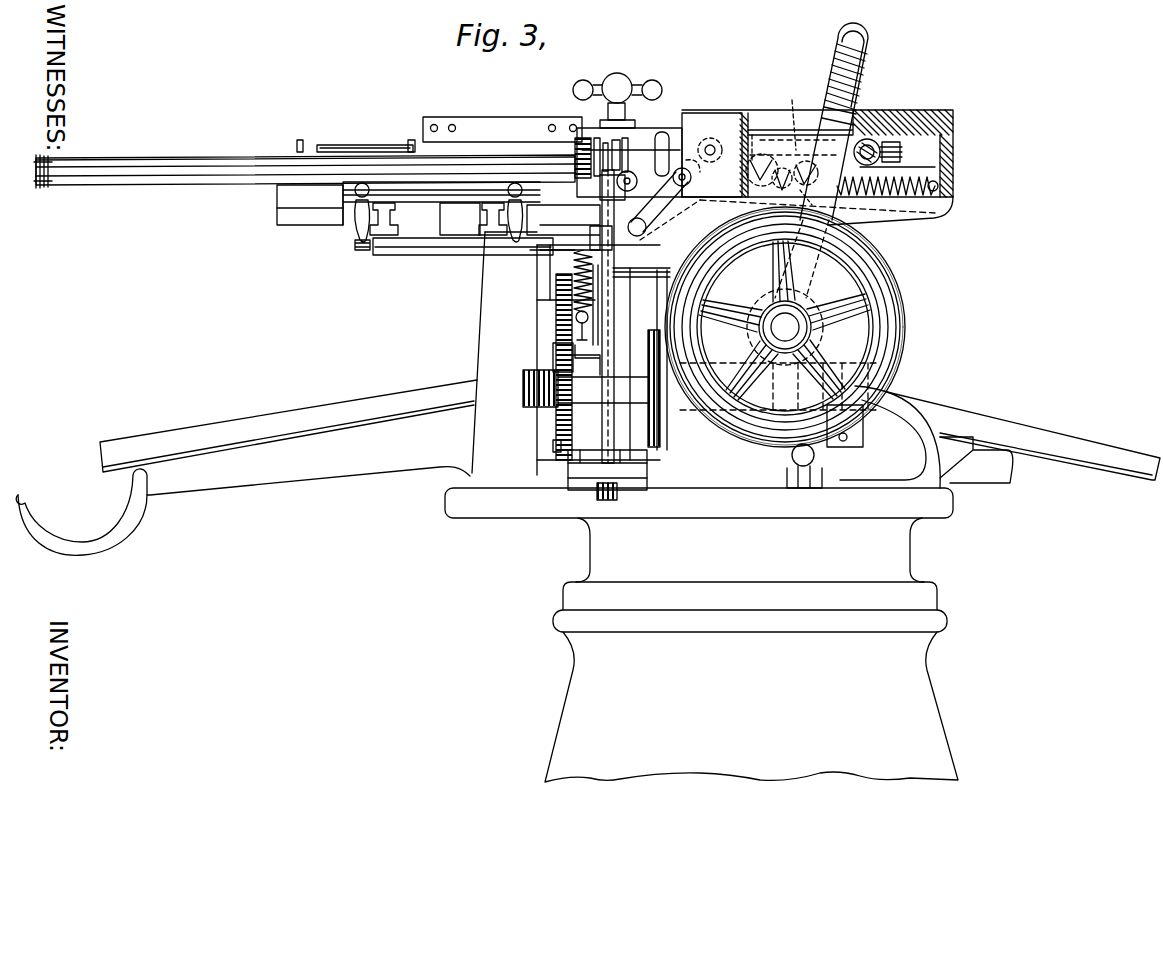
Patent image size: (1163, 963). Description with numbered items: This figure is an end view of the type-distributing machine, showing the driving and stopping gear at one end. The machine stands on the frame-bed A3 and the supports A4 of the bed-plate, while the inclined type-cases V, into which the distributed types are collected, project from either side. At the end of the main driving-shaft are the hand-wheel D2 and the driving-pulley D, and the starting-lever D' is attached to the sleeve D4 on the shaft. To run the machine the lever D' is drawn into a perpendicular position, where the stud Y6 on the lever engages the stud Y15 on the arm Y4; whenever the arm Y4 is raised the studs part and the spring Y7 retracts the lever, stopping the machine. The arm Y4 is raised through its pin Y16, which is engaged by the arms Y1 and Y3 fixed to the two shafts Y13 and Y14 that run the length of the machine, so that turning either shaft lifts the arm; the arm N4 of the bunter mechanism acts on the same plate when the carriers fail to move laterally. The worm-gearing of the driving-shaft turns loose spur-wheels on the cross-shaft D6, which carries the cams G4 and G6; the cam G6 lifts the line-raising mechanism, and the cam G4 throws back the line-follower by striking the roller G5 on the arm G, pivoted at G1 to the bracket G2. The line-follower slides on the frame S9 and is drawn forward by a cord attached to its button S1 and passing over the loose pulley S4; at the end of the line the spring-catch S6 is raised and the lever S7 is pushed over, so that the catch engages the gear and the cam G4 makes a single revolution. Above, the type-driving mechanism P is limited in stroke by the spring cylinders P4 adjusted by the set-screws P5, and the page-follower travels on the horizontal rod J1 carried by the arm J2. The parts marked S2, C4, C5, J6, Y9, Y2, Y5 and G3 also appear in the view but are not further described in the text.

The horizontal rod J1 is at (37, 187).
The arm J2 is at (147, 166).
The type-driving mechanism P is at (476, 105).
The cylinder containing spiral spring P4 is at (371, 130).
The set-screw P5 is at (299, 145).
The button S1 is at (578, 142).
The collar S2 is at (628, 148).
The loose pulley S4 is at (585, 180).
The spring-catch S6 is at (608, 150).
The lever S7 is at (598, 238).
The frame S9 is at (597, 140).
The pivot C4 is at (628, 192).
The bracket C5 is at (598, 205).
The arm N4 is at (672, 166).
The block J6 is at (715, 155).
The pawl Y9 is at (690, 150).
The arm Y1 is at (856, 142).
The housing Y2 is at (925, 172).
The arm Y3 is at (764, 152).
The arm Y4 is at (798, 160).
The rod Y5 is at (900, 152).
The stud Y6 is at (845, 210).
The spring Y7 is at (937, 194).
The shaft Y13 is at (891, 140).
The shaft Y14 is at (747, 128).
The stud Y15 is at (806, 160).
The pin Y16 is at (802, 106).
The starting-lever D' is at (821, 160).
The driving-pulley D is at (801, 347).
The hand-wheel D2 is at (903, 320).
The sleeve D4 is at (812, 333).
The cross-shaft D6 is at (523, 386).
The arm G is at (615, 302).
The pivot G1 is at (558, 482).
The bracket G2 is at (648, 458).
The gear G3 is at (557, 420).
The cam G4 is at (554, 446).
The roller G5 is at (553, 350).
The cam G6 is at (572, 303).
The frame-bed A3 is at (699, 560).
The support A4 is at (514, 507).
The type-case V is at (270, 422).